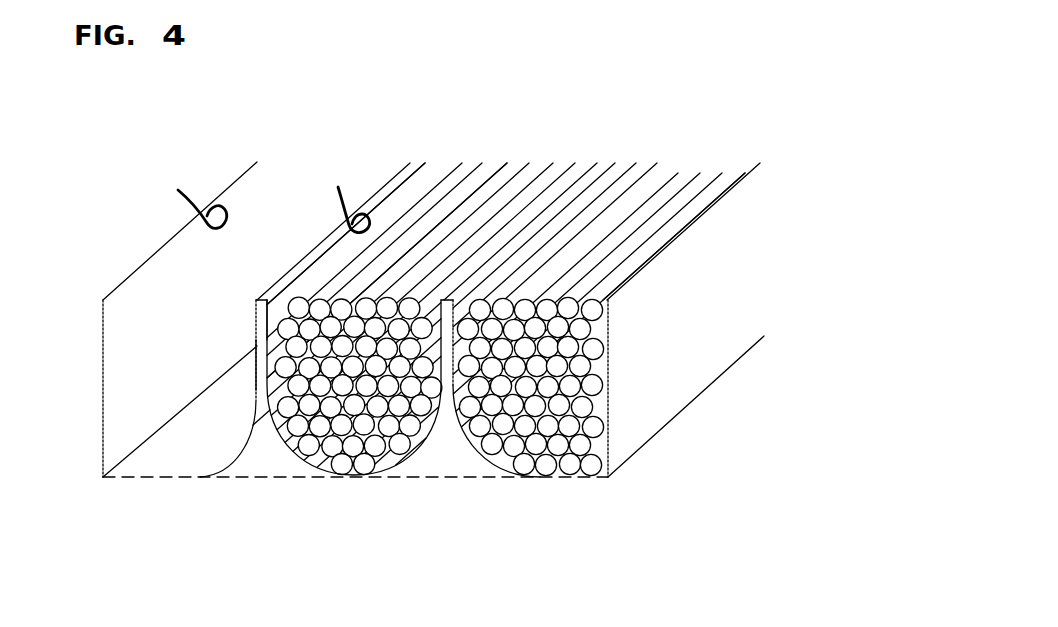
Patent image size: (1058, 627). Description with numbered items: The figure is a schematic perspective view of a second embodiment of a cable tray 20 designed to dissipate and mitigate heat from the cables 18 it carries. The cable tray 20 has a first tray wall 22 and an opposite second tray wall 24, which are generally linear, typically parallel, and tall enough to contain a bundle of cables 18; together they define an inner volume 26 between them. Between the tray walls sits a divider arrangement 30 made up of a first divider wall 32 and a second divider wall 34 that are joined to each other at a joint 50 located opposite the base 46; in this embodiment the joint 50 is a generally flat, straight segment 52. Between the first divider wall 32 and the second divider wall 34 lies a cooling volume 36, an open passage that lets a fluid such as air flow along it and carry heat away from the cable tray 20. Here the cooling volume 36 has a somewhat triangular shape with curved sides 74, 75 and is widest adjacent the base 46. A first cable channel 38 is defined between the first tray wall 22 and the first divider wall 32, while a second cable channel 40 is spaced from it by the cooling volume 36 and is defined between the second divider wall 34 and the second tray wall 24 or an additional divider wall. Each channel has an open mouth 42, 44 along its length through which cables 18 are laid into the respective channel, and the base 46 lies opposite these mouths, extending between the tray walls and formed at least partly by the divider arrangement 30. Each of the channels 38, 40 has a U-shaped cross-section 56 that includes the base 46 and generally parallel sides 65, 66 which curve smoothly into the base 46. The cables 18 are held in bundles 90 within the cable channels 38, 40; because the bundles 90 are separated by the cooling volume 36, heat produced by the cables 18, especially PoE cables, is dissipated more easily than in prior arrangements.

The cables 18 is at (425, 228).
The cable tray 20 is at (858, 140).
The first tray wall 22 is at (101, 379).
The second tray wall 24 is at (641, 429).
The inner volume 26 is at (155, 267).
The divider arrangement 30 is at (262, 296).
The first divider wall 32 is at (253, 392).
The second divider wall 34 is at (262, 412).
The cooling volume 36 is at (267, 464).
The first cable channel 38 is at (120, 470).
The second cable channel 40 is at (391, 183).
The open mouth 42 is at (190, 193).
The open mouth 44 is at (345, 194).
The base 46 is at (153, 478).
The joint 50 is at (558, 200).
The flat, straight segment 52 is at (535, 222).
The U-shaped cross-section 56 is at (288, 168).
The side 65 is at (292, 310).
The side 66 is at (255, 366).
The curved side 74 is at (247, 430).
The curved side 75 is at (281, 450).
The bundles 90 is at (356, 457).